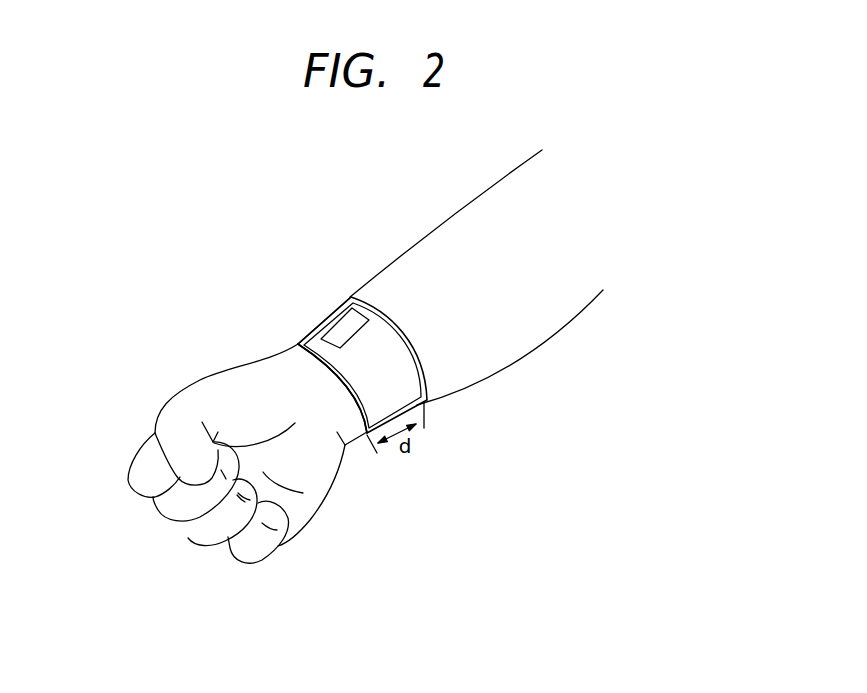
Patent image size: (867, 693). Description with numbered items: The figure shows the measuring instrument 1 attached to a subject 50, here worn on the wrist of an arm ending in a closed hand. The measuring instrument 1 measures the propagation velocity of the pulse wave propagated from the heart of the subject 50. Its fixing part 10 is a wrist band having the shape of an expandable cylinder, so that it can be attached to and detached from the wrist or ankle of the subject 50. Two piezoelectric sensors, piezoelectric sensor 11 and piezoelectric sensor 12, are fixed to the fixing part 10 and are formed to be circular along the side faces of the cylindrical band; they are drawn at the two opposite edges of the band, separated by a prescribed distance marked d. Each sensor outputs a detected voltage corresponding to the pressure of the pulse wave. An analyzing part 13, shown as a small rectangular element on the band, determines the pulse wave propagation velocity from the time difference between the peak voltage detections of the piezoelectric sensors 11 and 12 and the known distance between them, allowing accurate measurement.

The measuring instrument 1 is at (243, 200).
The fixing part 10 is at (403, 386).
The piezoelectric sensor 11 is at (348, 295).
The piezoelectric sensor 12 is at (296, 340).
The analyzing part 13 is at (342, 327).
The subject 50 is at (475, 220).